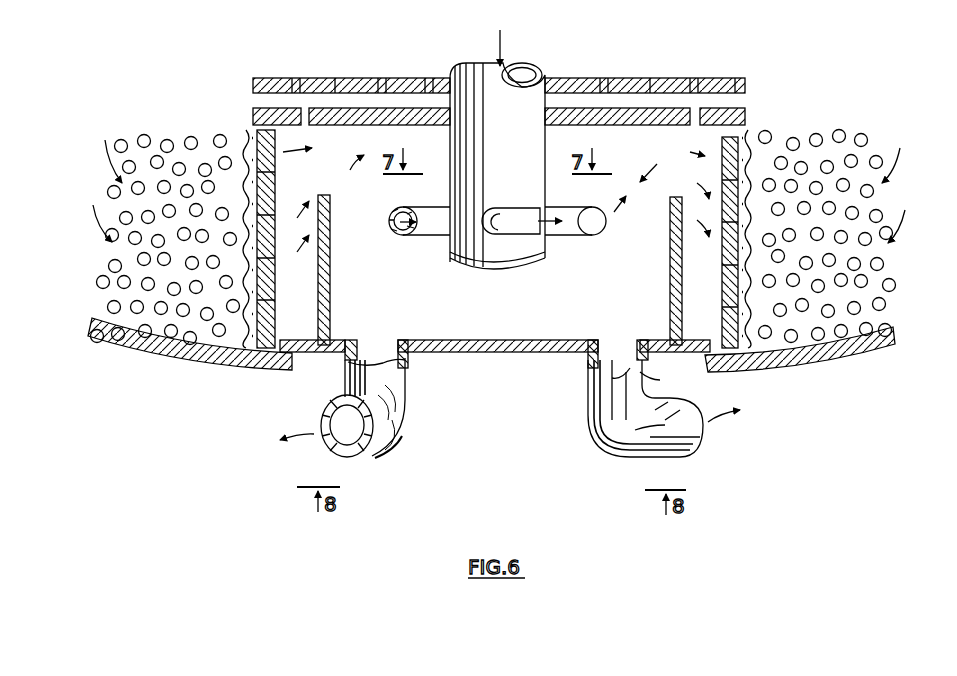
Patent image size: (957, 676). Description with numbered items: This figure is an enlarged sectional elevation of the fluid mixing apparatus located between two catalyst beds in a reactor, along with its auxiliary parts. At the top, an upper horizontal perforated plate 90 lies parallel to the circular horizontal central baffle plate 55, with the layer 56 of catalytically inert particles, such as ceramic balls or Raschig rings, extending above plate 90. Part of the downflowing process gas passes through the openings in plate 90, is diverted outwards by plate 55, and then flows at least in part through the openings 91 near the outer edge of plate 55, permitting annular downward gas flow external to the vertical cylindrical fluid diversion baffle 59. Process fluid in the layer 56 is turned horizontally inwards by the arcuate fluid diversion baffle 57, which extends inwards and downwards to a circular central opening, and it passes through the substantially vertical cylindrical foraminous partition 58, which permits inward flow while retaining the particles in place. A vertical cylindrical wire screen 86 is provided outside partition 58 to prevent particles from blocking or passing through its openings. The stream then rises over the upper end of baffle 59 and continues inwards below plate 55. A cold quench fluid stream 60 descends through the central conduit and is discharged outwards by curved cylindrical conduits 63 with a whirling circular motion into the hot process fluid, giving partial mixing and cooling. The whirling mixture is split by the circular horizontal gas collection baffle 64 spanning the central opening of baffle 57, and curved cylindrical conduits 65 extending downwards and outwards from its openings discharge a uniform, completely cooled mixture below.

The central baffle plate 55 is at (388, 108).
The layer of catalytically inert particles 56 is at (118, 268).
The fluid diversion baffle 57 is at (157, 358).
The cylindrical foraminous partition 58 is at (277, 133).
The cylindrical fluid diversion baffle 59 is at (331, 230).
The cold quench fluid stream 60 is at (504, 45).
The curved cylindrical conduits 63 is at (428, 237).
The gas collection baffle 64 is at (340, 340).
The curved cylindrical conduits 65 is at (408, 402).
The vertical cylindrical wire screen 86 is at (244, 335).
The upper horizontal perforated plate 90 is at (296, 78).
The openings 91 is at (303, 108).